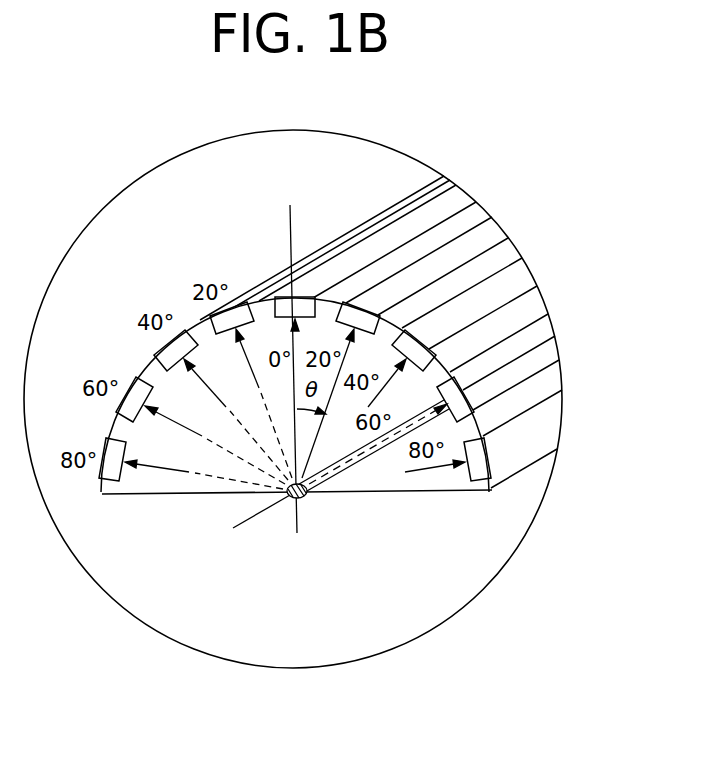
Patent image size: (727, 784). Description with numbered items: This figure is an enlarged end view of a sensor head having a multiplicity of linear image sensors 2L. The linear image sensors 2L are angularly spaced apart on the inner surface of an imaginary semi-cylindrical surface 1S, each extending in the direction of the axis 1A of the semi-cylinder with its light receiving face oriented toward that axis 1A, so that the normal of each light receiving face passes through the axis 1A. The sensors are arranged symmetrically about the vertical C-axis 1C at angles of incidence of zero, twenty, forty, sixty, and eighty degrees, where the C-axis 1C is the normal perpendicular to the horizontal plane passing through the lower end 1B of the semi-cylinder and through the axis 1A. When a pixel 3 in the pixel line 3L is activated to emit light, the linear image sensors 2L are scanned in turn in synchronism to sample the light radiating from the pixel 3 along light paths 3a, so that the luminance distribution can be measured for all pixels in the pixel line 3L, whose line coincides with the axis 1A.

The axis 1A is at (263, 520).
The lower end of the semi-cylinder 1B is at (357, 482).
The C-axis 1C is at (288, 240).
The imaginary semi-cylindrical surface 1S is at (146, 368).
The linear image sensors 2L is at (480, 233).
The pixel 3 is at (300, 496).
The light path 3a is at (195, 477).
The pixel line 3L is at (373, 457).